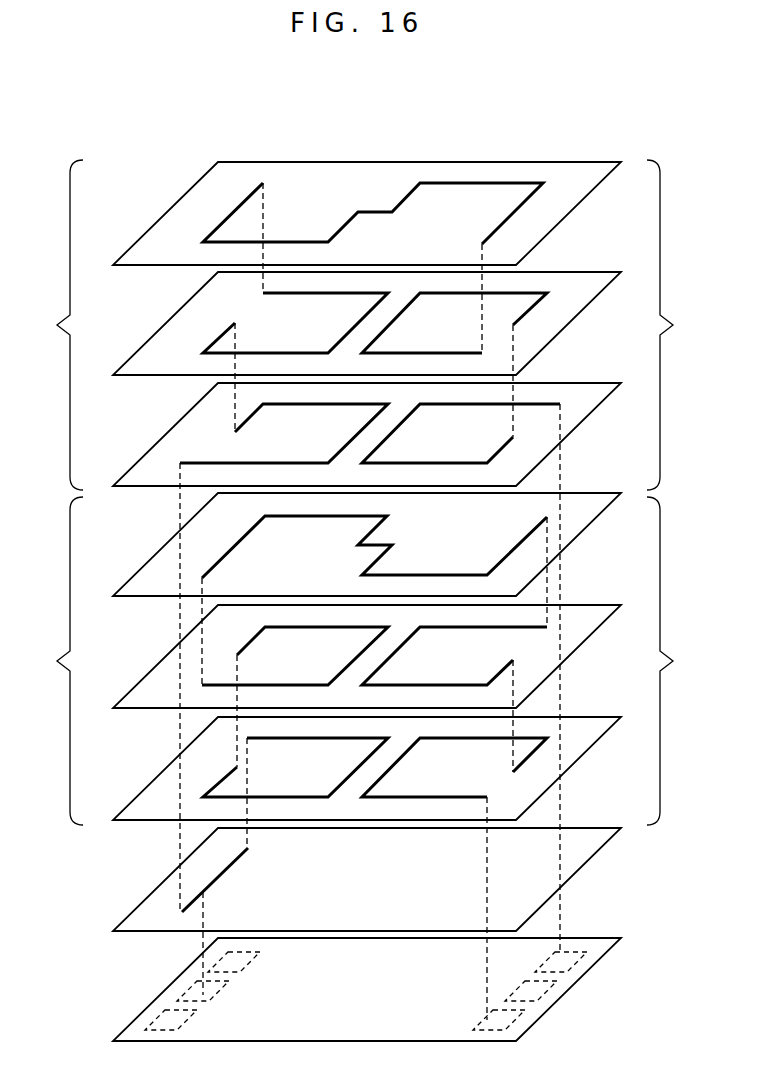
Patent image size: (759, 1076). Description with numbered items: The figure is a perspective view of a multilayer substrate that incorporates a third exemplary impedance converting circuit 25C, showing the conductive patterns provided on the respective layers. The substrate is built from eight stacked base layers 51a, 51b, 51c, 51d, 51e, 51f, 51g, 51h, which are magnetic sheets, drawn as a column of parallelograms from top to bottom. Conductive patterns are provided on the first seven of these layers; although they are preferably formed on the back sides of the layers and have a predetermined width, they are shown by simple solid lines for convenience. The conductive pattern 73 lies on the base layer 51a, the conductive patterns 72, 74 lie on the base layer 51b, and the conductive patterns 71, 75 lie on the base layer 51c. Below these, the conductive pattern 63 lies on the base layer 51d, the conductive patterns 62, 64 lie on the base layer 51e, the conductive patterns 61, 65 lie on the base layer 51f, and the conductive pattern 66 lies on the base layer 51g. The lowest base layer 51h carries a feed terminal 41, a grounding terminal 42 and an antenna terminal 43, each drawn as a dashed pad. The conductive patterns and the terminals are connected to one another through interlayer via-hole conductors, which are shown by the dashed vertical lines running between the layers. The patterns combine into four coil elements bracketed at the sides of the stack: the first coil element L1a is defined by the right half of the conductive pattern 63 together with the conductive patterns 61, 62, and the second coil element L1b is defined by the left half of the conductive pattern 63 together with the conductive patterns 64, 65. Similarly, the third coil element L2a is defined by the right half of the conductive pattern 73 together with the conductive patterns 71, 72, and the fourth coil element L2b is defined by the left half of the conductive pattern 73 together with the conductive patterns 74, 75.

The third exemplary impedance converting circuit 25C is at (334, 129).
The base layer 51a is at (165, 213).
The base layer 51b is at (165, 324).
The base layer 51c is at (165, 435).
The base layer 51d is at (165, 545).
The base layer 51e is at (165, 657).
The base layer 51f is at (165, 769).
The base layer 51g is at (165, 880).
The base layer 51h is at (165, 990).
The conductive pattern 73 is at (373, 210).
The conductive pattern 74 is at (282, 351).
The conductive pattern 72 is at (430, 351).
The conductive pattern 75 is at (282, 461).
The conductive pattern 71 is at (430, 461).
The conductive pattern 63 is at (380, 541).
The conductive pattern 64 is at (282, 683).
The conductive pattern 62 is at (430, 683).
The conductive pattern 65 is at (282, 795).
The conductive pattern 61 is at (430, 795).
The conductive pattern 66 is at (226, 866).
The feed terminal 41 is at (512, 1010).
The grounding terminal 42 is at (578, 952).
The antenna terminal 43 is at (226, 985).
The fourth coil element L2b is at (48, 325).
The second coil element L1b is at (48, 661).
The third coil element L2a is at (678, 325).
The first coil element L1a is at (678, 661).